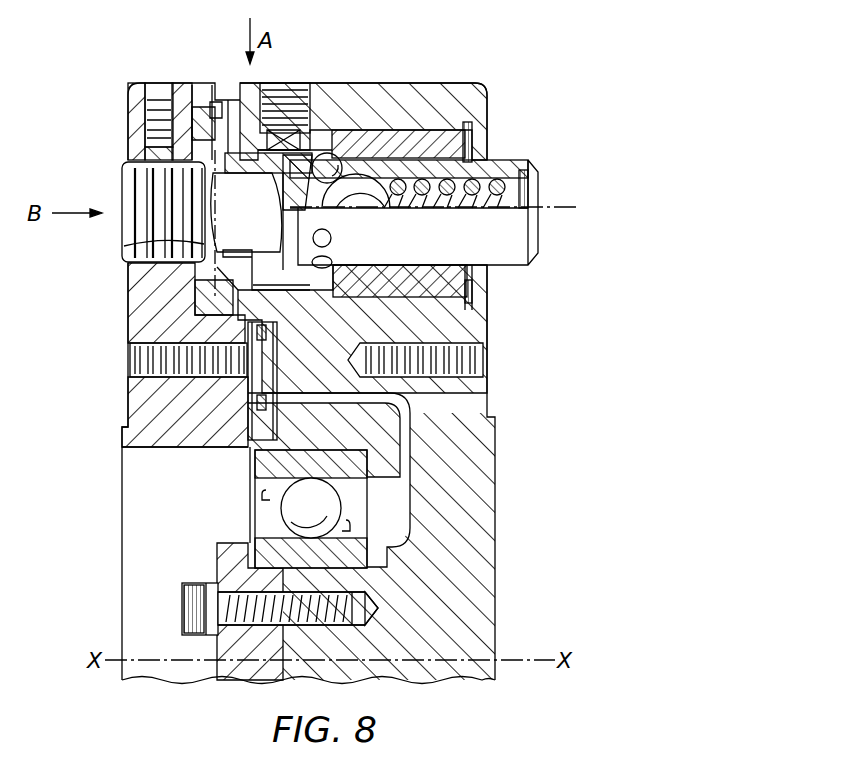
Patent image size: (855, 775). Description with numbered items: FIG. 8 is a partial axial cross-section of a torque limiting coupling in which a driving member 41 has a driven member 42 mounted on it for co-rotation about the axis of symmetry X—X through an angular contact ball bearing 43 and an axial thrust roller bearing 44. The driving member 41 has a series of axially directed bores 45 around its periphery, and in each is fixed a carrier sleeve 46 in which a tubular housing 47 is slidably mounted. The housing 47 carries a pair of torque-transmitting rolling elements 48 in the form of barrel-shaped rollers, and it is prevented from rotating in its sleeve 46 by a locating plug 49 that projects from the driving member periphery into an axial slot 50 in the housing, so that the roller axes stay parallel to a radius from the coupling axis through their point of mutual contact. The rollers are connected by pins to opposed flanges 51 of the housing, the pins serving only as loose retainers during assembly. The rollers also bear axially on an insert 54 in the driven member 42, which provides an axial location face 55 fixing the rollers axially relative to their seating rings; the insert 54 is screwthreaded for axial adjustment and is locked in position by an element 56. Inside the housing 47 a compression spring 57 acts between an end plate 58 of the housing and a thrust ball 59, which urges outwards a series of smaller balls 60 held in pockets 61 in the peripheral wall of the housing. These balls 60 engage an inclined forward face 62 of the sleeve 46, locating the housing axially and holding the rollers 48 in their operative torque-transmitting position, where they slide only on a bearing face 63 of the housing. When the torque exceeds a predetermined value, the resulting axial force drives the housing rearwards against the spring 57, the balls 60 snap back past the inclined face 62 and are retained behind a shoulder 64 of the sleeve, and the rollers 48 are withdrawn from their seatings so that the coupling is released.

The driving member 41 is at (470, 534).
The driven member 42 is at (160, 401).
The angular contact ball bearing 43 is at (292, 511).
The axial thrust roller bearing 44 is at (258, 378).
The axially directed bore 45 is at (395, 130).
The carrier sleeve 46 is at (466, 120).
The tubular housing 47 is at (498, 237).
The torque-transmitting rolling element 48 is at (246, 212).
The locating plug 49 is at (287, 95).
The axial slot 50 is at (320, 148).
The opposed flange 51 is at (226, 106).
The insert 54 is at (140, 195).
The axial location face 55 is at (140, 243).
The locking element 56 is at (157, 108).
The compression spring 57 is at (470, 190).
The end plate 58 is at (528, 195).
The thrust ball 59 is at (368, 200).
The ball 60 is at (330, 238).
The pocket 61 is at (336, 181).
The inclined forward face 62 is at (333, 259).
The bearing face 63 is at (282, 240).
The shoulder 64 is at (364, 270).